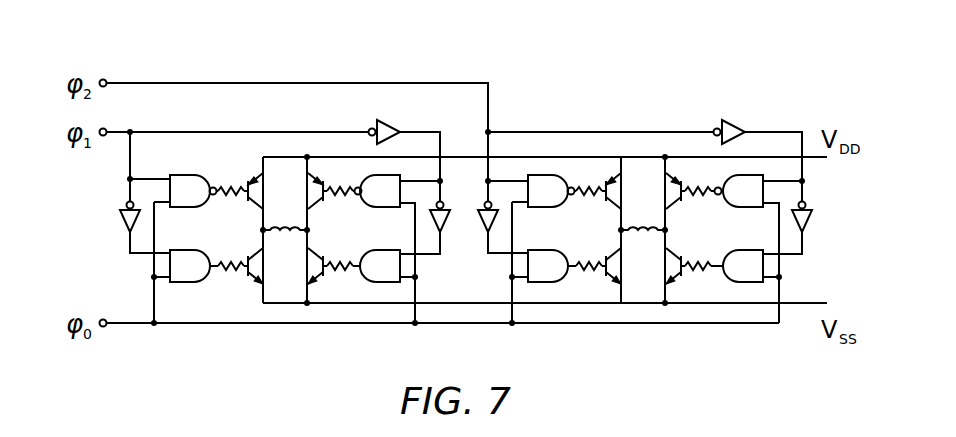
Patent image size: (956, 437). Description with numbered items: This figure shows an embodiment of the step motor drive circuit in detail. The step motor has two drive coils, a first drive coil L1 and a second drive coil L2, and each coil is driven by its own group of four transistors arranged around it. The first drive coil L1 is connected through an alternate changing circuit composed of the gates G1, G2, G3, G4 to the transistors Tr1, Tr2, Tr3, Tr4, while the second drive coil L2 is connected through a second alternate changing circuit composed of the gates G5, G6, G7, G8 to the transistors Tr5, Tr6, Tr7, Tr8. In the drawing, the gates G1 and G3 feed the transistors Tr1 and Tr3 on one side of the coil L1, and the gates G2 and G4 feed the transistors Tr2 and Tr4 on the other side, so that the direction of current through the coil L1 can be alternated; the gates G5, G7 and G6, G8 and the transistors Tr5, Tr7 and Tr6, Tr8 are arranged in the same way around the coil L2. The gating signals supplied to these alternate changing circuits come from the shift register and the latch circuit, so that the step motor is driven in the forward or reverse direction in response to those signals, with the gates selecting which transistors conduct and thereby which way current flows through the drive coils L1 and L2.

The gate G1 is at (194, 192).
The gate G2 is at (376, 192).
The gate G3 is at (194, 267).
The gate G4 is at (376, 267).
The gate G5 is at (552, 192).
The gate G6 is at (737, 192).
The gate G7 is at (552, 267).
The gate G8 is at (737, 267).
The transistor Tr1 is at (240, 206).
The transistor Tr2 is at (332, 206).
The transistor Tr3 is at (240, 281).
The transistor Tr4 is at (334, 275).
The transistor Tr5 is at (598, 206).
The transistor Tr6 is at (691, 206).
The transistor Tr7 is at (598, 281).
The transistor Tr8 is at (692, 275).
The drive coil L1 is at (285, 214).
The drive coil L2 is at (643, 214).